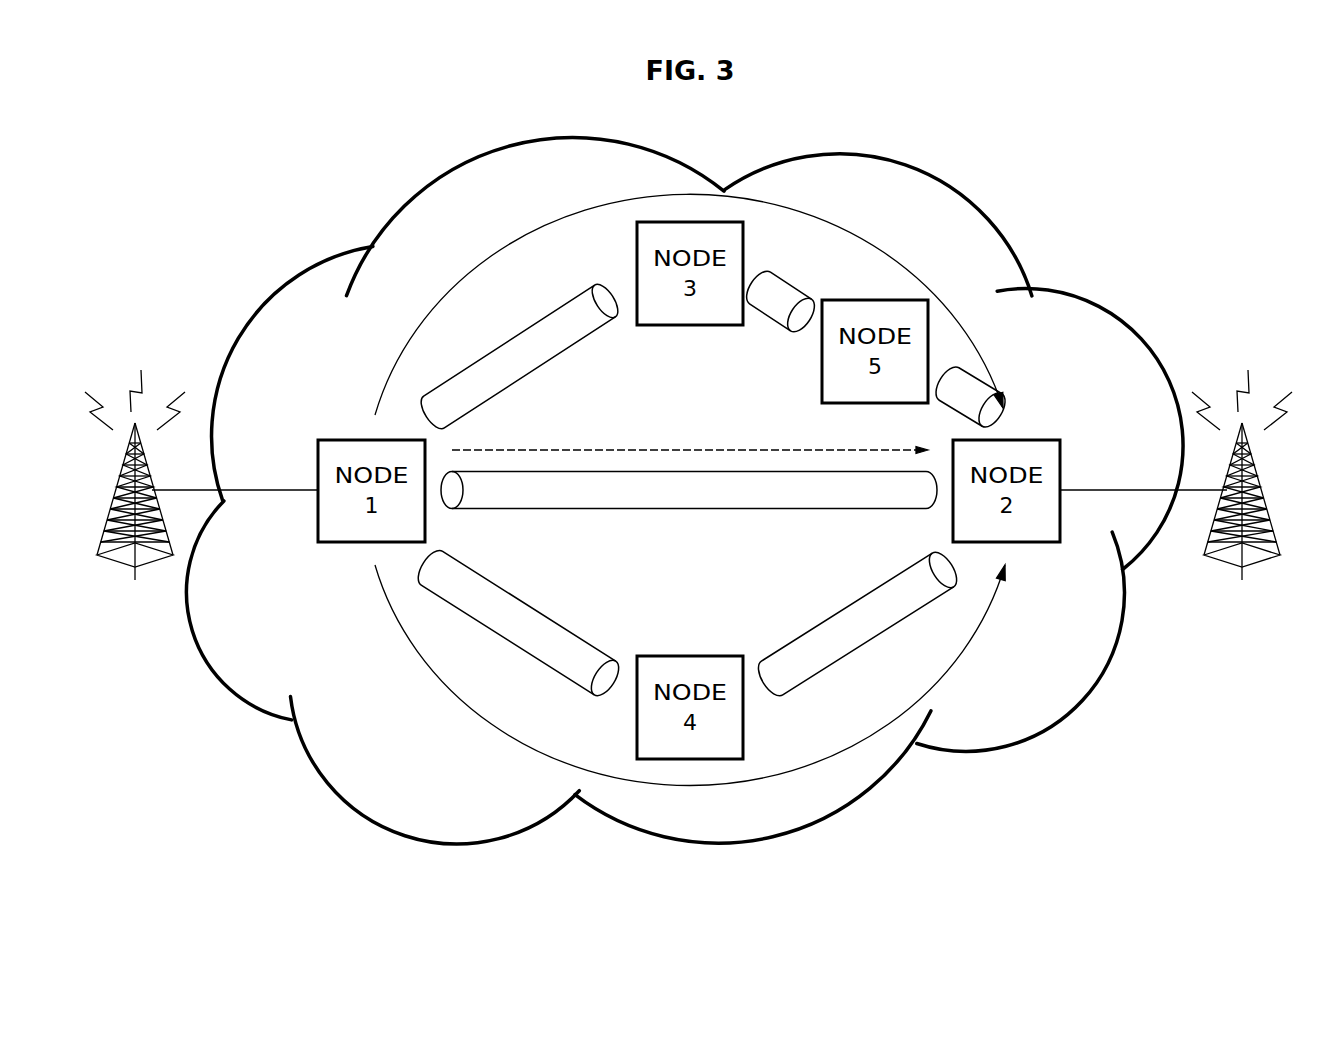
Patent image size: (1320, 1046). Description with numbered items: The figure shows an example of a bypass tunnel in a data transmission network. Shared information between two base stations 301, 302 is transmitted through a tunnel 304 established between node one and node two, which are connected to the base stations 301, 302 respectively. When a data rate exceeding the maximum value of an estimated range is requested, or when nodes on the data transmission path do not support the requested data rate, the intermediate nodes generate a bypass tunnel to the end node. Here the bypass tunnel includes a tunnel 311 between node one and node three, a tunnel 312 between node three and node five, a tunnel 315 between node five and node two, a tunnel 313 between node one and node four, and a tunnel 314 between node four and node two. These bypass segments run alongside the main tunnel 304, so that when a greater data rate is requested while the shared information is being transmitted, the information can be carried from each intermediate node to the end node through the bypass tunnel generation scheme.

The base station 301 is at (135, 573).
The base station 302 is at (1242, 577).
The tunnel 304 is at (687, 510).
The tunnel 311 is at (508, 338).
The tunnel 312 is at (793, 285).
The tunnel 313 is at (510, 642).
The tunnel 314 is at (847, 607).
The tunnel 315 is at (982, 387).